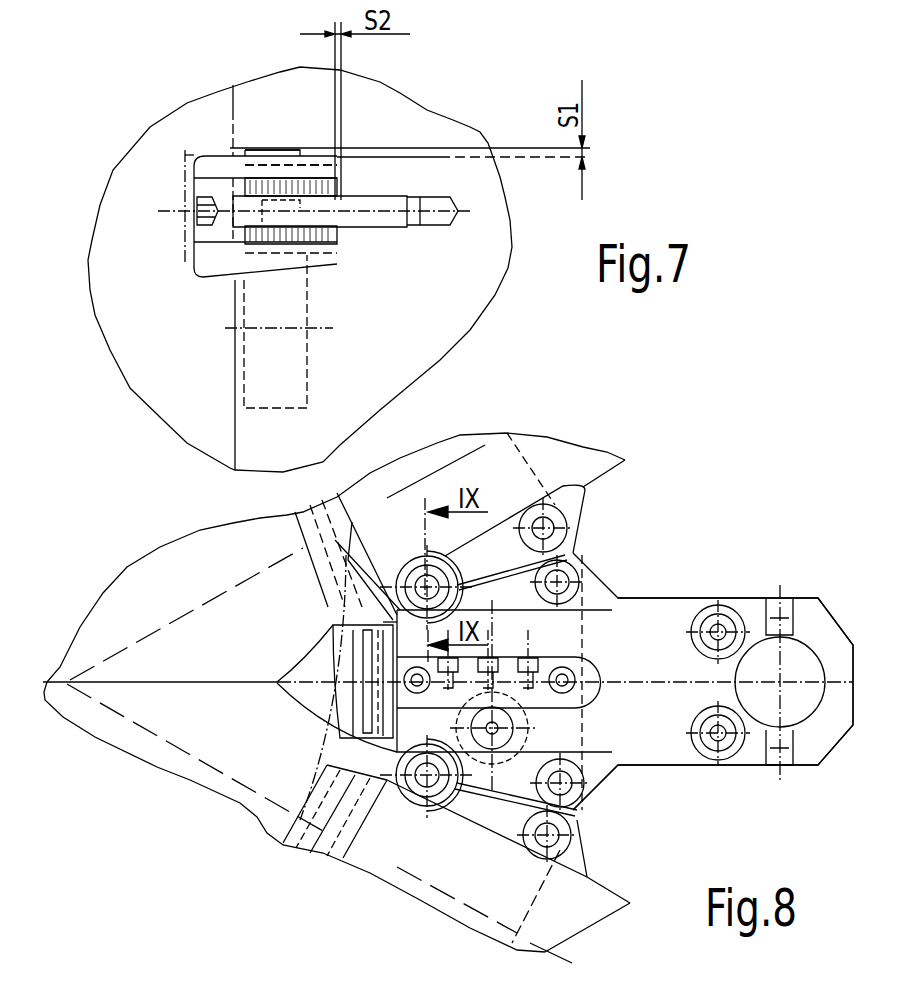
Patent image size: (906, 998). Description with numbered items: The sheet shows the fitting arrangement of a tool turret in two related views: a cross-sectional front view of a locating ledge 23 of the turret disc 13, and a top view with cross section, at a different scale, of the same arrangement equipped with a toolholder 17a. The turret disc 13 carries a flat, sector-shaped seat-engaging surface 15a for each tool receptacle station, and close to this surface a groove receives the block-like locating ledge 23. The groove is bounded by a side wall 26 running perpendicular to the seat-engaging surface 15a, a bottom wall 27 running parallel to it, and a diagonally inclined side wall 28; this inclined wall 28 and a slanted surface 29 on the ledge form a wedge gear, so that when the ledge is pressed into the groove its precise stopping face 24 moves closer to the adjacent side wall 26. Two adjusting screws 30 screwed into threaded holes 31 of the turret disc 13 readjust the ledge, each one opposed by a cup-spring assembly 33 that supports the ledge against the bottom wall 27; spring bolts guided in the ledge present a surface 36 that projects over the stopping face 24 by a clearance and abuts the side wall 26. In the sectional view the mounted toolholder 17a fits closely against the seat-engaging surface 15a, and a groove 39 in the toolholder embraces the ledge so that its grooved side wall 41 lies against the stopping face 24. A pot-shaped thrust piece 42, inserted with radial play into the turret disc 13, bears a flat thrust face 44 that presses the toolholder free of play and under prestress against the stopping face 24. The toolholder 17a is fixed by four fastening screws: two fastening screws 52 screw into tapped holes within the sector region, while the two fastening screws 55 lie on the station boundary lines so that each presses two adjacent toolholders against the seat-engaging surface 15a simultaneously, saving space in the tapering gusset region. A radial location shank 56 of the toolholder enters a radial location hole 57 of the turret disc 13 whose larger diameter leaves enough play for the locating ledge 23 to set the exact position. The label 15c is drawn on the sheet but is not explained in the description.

In FIG. 7, the turret disc 13 is at (465, 303).
In FIG. 8, the turret disc 13 is at (118, 747).
In FIG. 8, the seat-engaging surface 15a is at (370, 752).
In FIG. 7, the tube wall section 15c is at (233, 112).
In FIG. 8, the toolholder 17a is at (578, 502).
In FIG. 8, the locating ledge 23 is at (585, 652).
In FIG. 7, the stopping face 24 is at (213, 150).
In FIG. 7, the side wall 26 is at (290, 148).
In FIG. 7, the bottom wall 27 is at (335, 262).
In FIG. 7, the side wall 28 is at (265, 270).
In FIG. 7, the slanted surface 29 is at (235, 300).
In FIG. 7, the adjusting screw 30 is at (200, 220).
In FIG. 7, the threaded hole 31 is at (425, 224).
In FIG. 7, the cup-spring assembly 33 is at (345, 183).
In FIG. 7, the surface 36 is at (255, 150).
In FIG. 7, the groove 39 is at (185, 267).
In FIG. 7, the grooved side wall 41 is at (194, 155).
In FIG. 7, the thrust piece 42 is at (298, 367).
In FIG. 8, the thrust piece 42 is at (560, 745).
In FIG. 7, the thrust face 44 is at (210, 278).
In FIG. 8, the fastening screw 52 is at (545, 528).
In FIG. 8, the fastening screw 55 is at (393, 593).
In FIG. 8, the radial location shank 56 is at (345, 707).
In FIG. 8, the radial location hole 57 is at (275, 683).